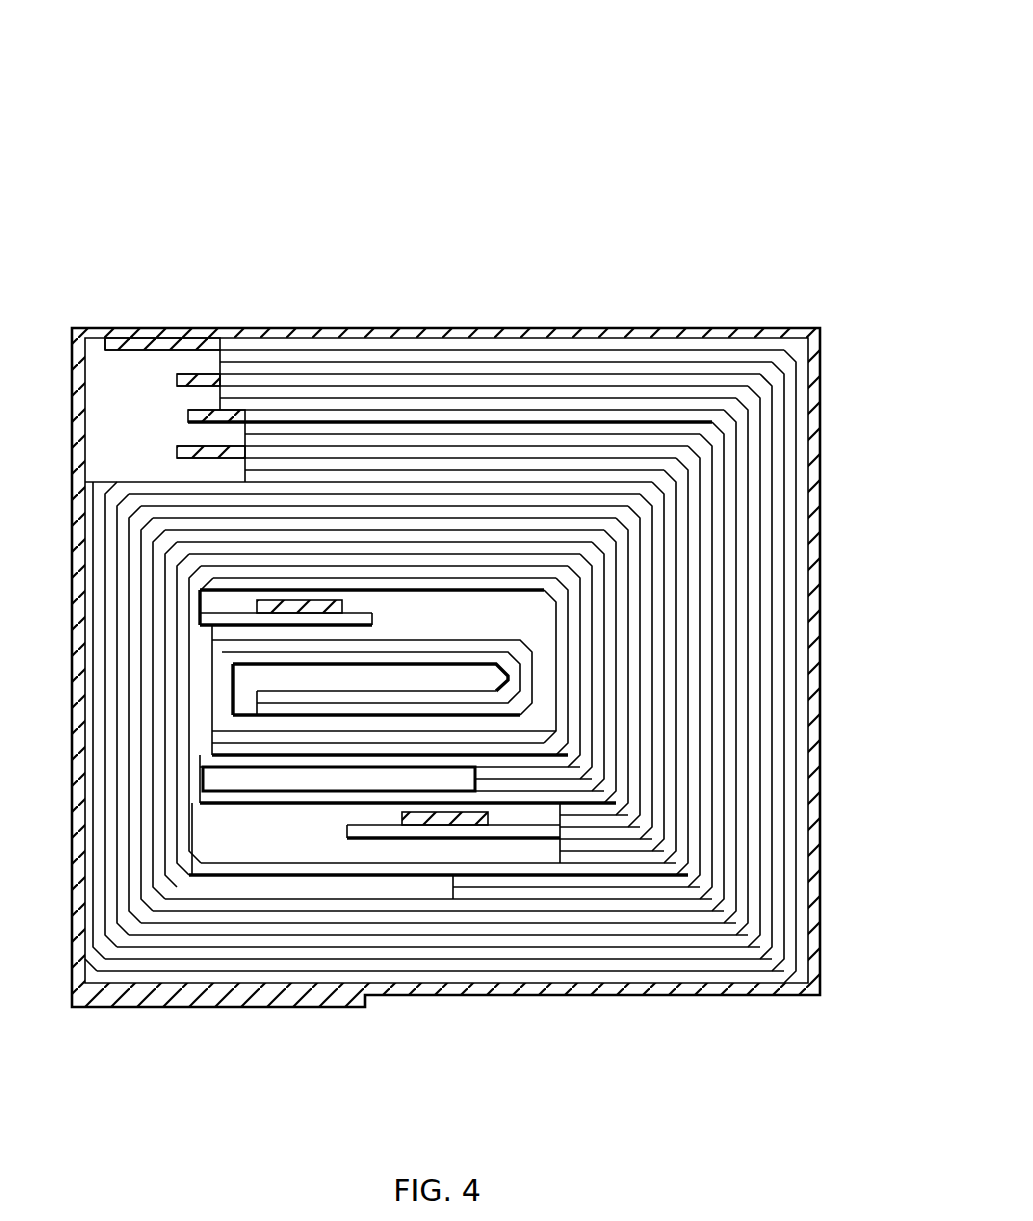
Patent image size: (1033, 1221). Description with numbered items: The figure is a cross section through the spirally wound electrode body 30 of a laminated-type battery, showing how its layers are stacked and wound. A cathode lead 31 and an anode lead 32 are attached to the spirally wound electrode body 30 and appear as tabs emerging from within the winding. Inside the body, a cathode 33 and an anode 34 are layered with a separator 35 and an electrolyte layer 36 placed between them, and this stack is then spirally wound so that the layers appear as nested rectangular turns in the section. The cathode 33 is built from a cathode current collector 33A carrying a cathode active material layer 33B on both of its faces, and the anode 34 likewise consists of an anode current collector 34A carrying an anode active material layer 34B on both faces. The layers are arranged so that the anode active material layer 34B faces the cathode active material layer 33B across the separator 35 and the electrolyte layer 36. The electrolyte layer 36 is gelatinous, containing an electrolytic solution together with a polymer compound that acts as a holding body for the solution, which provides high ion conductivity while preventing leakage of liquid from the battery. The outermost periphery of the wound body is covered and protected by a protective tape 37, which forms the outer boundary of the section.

The spirally wound electrode body 30 is at (651, 102).
The cathode lead 31 is at (285, 600).
The anode lead 32 is at (440, 815).
The cathode 33 is at (285, 208).
The cathode current collector 33A is at (205, 382).
The cathode active material layer 33B is at (281, 420).
The anode 34 is at (370, 208).
The anode current collector 34A is at (385, 345).
The anode active material layer 34B is at (507, 478).
The separator 35 is at (563, 458).
The electrolyte layer 36 is at (688, 355).
The protective tape 37 is at (778, 335).